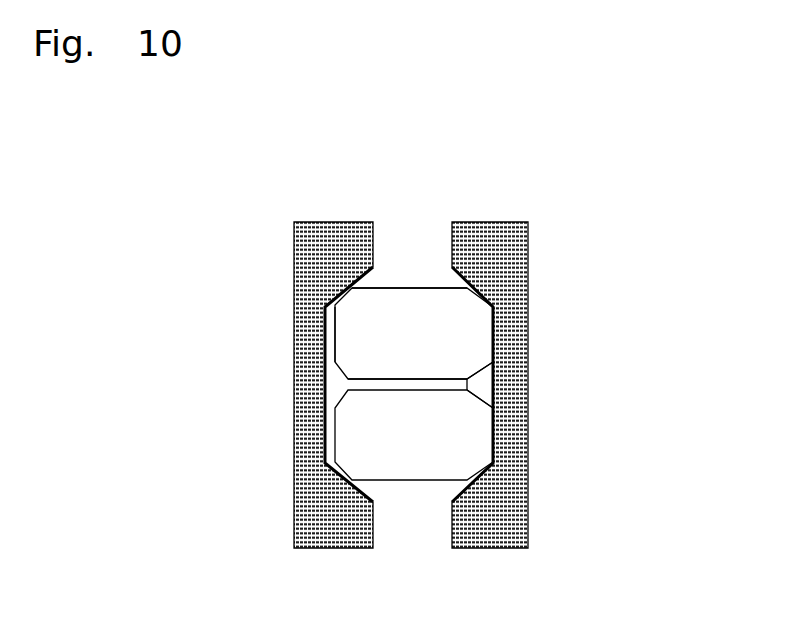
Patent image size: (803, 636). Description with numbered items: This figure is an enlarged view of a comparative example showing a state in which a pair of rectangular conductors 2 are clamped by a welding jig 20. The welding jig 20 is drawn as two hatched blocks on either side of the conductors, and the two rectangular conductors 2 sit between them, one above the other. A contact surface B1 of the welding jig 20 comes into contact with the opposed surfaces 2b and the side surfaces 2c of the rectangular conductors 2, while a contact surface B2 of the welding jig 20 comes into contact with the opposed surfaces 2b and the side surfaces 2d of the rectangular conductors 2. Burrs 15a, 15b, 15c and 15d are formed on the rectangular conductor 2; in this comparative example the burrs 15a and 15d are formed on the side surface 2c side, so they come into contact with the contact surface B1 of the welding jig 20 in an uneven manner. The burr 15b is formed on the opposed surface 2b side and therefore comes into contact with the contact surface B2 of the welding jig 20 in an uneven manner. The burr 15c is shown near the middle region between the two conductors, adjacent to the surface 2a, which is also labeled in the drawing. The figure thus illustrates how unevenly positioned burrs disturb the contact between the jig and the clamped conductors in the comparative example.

The welding jig 20 is at (313, 213).
The rectangular conductor 2 is at (406, 300).
The cell surface (middle connecting portion) 2a is at (405, 377).
The opposed surface 2b is at (432, 287).
The side surface 2c is at (332, 333).
The side surface 2d is at (491, 342).
The burr 15a is at (326, 362).
The burr 15b is at (462, 277).
The burr 15c is at (473, 386).
The burr 15d is at (326, 307).
The contact surface B1 is at (326, 437).
The contact surface B2 is at (498, 449).